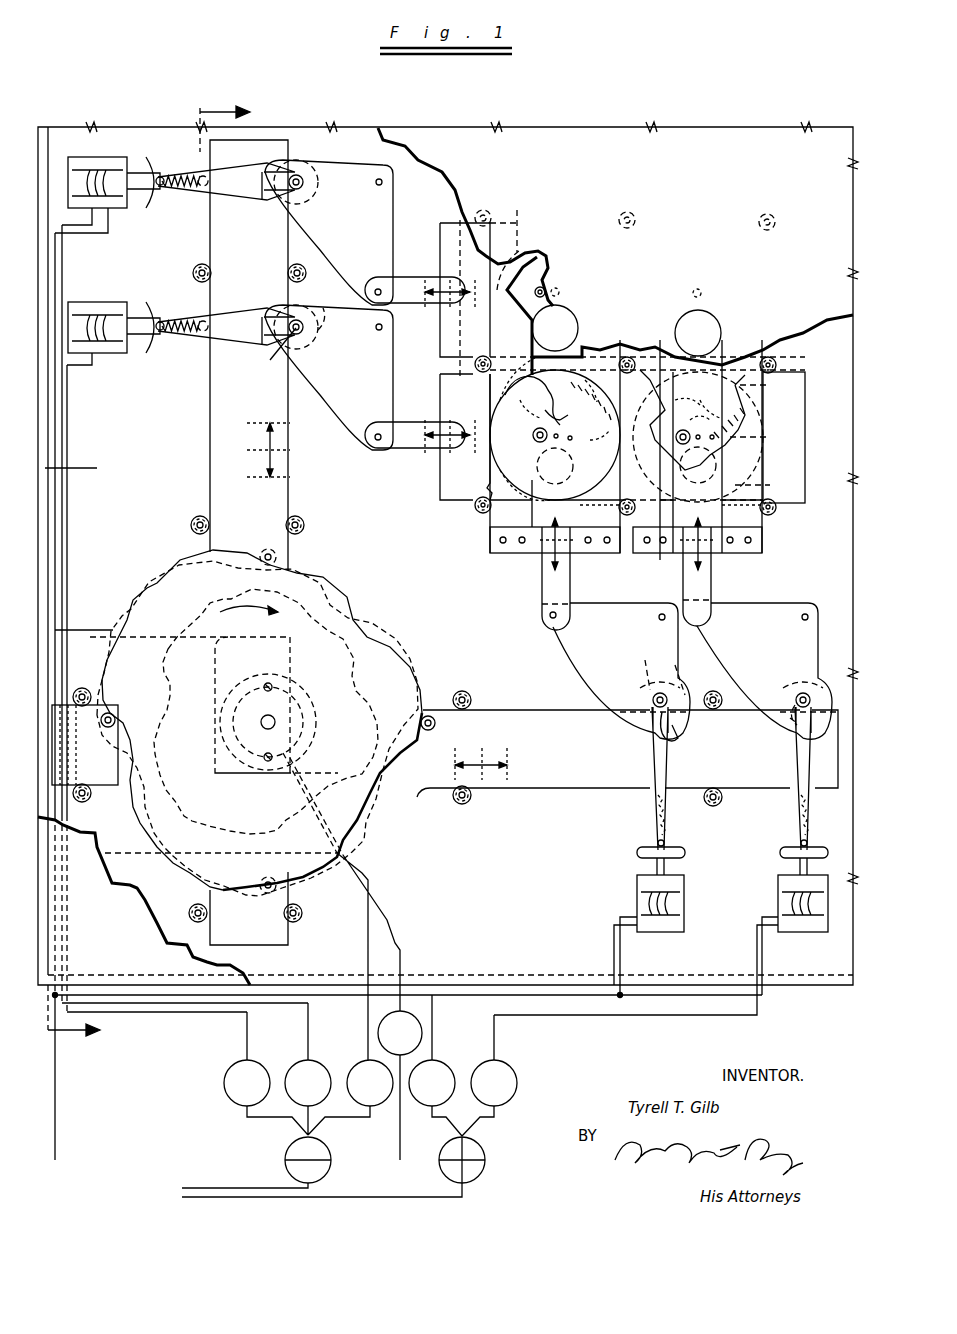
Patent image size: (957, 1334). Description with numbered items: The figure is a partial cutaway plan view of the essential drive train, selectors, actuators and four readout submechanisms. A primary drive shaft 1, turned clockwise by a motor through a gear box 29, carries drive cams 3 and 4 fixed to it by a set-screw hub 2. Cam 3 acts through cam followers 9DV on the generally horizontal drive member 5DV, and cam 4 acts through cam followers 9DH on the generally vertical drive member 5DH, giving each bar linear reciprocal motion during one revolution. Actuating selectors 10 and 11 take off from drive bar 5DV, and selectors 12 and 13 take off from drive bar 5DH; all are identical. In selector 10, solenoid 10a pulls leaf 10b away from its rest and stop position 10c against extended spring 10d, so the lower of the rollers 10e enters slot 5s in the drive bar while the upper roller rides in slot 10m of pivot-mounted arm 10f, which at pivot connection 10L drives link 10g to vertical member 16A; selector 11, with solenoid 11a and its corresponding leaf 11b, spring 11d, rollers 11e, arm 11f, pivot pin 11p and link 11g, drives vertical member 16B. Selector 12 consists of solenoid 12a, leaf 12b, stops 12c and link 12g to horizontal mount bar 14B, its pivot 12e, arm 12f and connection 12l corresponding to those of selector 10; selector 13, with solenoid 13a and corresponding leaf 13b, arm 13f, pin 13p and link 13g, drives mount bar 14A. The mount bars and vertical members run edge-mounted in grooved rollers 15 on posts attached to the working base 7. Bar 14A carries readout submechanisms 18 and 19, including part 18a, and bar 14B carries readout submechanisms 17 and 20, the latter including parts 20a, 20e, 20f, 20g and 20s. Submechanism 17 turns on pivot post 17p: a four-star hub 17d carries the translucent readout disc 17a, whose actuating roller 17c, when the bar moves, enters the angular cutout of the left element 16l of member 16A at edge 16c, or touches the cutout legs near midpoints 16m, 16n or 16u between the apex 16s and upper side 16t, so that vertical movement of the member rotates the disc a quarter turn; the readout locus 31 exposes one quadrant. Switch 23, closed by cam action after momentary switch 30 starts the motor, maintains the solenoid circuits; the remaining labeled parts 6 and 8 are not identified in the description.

The primary drive shaft 1 is at (275, 722).
The set-screw hub 2 is at (322, 700).
The drive cam 3 is at (118, 626).
The drive cam 4 is at (176, 566).
The generally vertical drive member 5DH is at (210, 394).
The generally horizontal drive member 5DV is at (530, 712).
The slot 5s is at (792, 730).
The guide rollers 6 is at (194, 264).
The working base 7 is at (409, 580).
The cover plate 8 is at (778, 276).
The cam followers 9DH is at (278, 555).
The cam followers 9DV is at (102, 727).
The actuating selector 10 is at (626, 762).
The solenoid 10a is at (684, 888).
The leaf 10b is at (669, 770).
The rest and stop position 10c is at (648, 666).
The extended spring 10d is at (658, 826).
The roller bearings 10e is at (654, 700).
The pivot-mounted arm 10f is at (617, 664).
The link 10g is at (572, 593).
The pivot connection 10L is at (550, 617).
The slot of travel 10m is at (678, 742).
The actuating selector 11 is at (666, 771).
The solenoid 11a is at (762, 890).
The lever arm 11b is at (790, 805).
The spring 11d is at (800, 828).
The pivot pin 11e is at (794, 700).
The lever plate 11f is at (765, 664).
The link 11g is at (713, 582).
The pin 11p is at (806, 614).
The actuator selector 12 is at (227, 347).
The solenoid 12a is at (114, 302).
The leaf 12b is at (254, 336).
The stops 12c is at (330, 332).
The pivot 12e is at (274, 352).
The lever plate 12f is at (352, 386).
The link 12g is at (414, 426).
The pin 12l is at (376, 442).
The actuator selector 13 is at (227, 202).
The solenoid 13a is at (116, 212).
The arm 13b is at (254, 191).
The lever plate 13f is at (352, 241).
The link 13g is at (414, 288).
The pin 13p is at (382, 180).
The horizontal mount bar 14A is at (438, 354).
The horizontal mount bar 14B is at (438, 380).
The grooved rollers 15 is at (483, 210).
The vertical member 16A is at (488, 534).
The vertical member 16B is at (602, 555).
The edge 16c is at (667, 446).
The left element 16l is at (659, 504).
The midpoint of lower cutout leg 16m is at (603, 524).
The lower side of angular cutout 16n is at (748, 524).
The apex 16s is at (585, 450).
The upper side of angular cutout 16t is at (745, 425).
The midpoint of opposed cutout leg 16u is at (660, 404).
The readout submechanism 17 is at (496, 480).
The readout disc 17a is at (494, 403).
The actuating roller 17c is at (532, 433).
The four-star shaped hub 17d is at (555, 471).
The pivot post 17p is at (556, 418).
The readout submechanism 18 is at (583, 316).
The ball seat 18a is at (496, 270).
The readout submechanism 19 is at (722, 331).
The readout submechanism 20 is at (763, 448).
The arm 20a is at (729, 456).
The hub 20e is at (700, 423).
The boss 20f is at (698, 465).
The guide 20g is at (771, 389).
The slot 20s is at (765, 437).
The switch 23 is at (405, 1095).
The gear box 29 is at (288, 690).
The momentary switch 30 is at (424, 1010).
The readout locus 31 is at (575, 322).